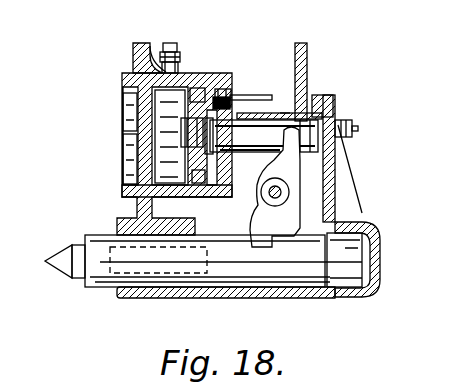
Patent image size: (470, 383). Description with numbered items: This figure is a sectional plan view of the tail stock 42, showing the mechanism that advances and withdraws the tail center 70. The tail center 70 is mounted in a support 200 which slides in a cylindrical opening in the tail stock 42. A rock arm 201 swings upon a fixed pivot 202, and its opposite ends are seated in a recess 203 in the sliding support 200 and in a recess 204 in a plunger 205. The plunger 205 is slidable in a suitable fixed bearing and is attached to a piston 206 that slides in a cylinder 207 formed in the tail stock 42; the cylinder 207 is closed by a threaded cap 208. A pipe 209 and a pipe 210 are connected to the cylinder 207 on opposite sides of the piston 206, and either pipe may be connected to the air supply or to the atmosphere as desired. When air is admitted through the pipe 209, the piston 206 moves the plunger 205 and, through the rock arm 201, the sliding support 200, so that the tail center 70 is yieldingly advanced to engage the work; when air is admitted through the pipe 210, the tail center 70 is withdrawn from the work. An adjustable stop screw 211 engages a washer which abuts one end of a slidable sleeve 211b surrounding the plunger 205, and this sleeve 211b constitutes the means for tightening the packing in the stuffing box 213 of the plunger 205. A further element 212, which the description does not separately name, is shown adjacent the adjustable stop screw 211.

The tail stock 42 is at (342, 180).
The tail center 70 is at (68, 262).
The support 200 is at (103, 286).
The rock arm 201 is at (262, 208).
The fixed pivot 202 is at (278, 194).
The recess 203 is at (272, 237).
The recess 204 is at (405, 107).
The plunger 205 is at (275, 130).
The piston 206 is at (200, 107).
The cylinder 207 is at (173, 176).
The threaded cap 208 is at (133, 101).
The pipe 209 is at (133, 58).
The pipe 210 is at (272, 93).
The adjustable stop screw 211 is at (335, 115).
The slidable sleeve 211b is at (280, 113).
The nut 212 is at (358, 130).
The stuffing box 213 is at (199, 228).